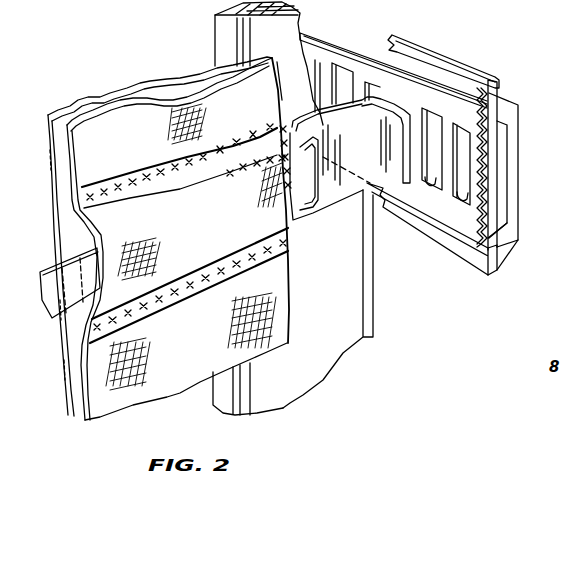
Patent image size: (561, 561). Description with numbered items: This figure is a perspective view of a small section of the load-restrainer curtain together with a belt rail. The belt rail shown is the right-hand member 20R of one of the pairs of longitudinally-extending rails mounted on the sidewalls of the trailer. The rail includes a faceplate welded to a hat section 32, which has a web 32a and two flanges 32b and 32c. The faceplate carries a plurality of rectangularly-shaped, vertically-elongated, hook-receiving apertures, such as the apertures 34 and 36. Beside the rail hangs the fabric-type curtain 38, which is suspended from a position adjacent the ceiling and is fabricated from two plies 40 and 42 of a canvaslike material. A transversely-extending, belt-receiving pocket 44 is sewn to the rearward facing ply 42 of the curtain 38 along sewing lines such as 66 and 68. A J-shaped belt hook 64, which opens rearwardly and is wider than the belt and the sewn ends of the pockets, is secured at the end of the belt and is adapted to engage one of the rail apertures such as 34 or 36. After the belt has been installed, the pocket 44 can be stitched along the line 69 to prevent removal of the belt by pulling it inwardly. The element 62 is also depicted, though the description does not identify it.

The right-hand member 20R is at (521, 33).
The hat section 32 is at (430, 154).
The web 32a is at (520, 118).
The flange 32b is at (498, 82).
The flange 32c is at (497, 254).
The hook-receiving aperture 34 is at (432, 187).
The hook-receiving aperture 36 is at (463, 203).
The curtain 38 is at (478, 217).
The ply 40 is at (138, 79).
The rearward facing ply 42 is at (176, 97).
The belt-receiving pocket 44 is at (100, 233).
The post 62 is at (268, 208).
The J-shaped belt hook 64 is at (333, 210).
The sewing line 66 is at (143, 173).
The sewing line 68 is at (123, 313).
The stitching line 69 is at (250, 157).